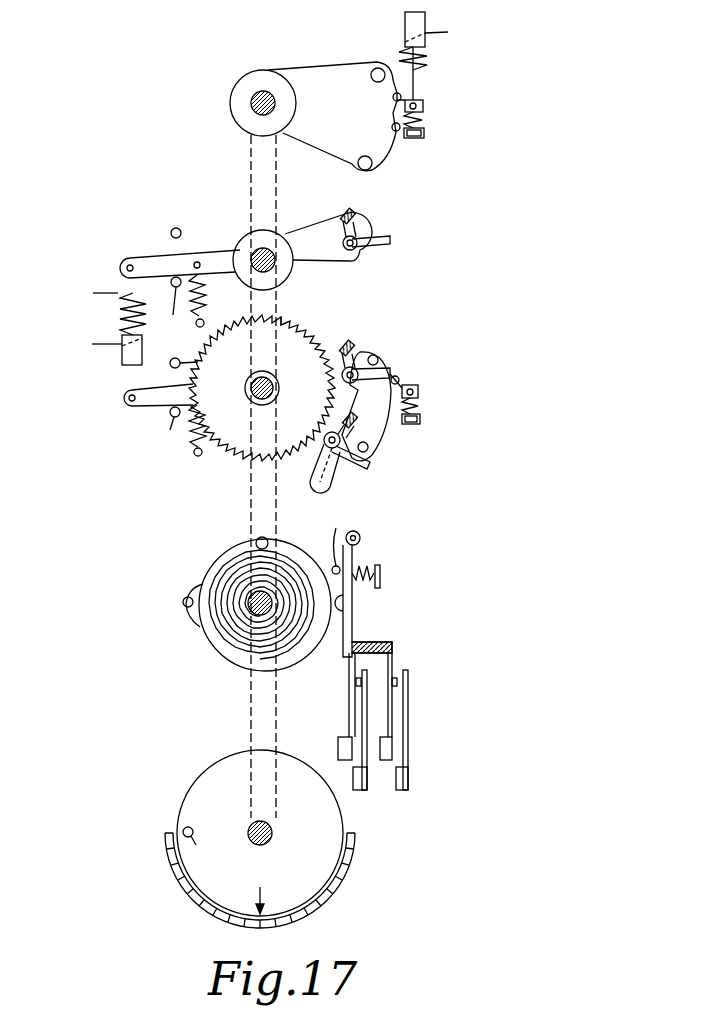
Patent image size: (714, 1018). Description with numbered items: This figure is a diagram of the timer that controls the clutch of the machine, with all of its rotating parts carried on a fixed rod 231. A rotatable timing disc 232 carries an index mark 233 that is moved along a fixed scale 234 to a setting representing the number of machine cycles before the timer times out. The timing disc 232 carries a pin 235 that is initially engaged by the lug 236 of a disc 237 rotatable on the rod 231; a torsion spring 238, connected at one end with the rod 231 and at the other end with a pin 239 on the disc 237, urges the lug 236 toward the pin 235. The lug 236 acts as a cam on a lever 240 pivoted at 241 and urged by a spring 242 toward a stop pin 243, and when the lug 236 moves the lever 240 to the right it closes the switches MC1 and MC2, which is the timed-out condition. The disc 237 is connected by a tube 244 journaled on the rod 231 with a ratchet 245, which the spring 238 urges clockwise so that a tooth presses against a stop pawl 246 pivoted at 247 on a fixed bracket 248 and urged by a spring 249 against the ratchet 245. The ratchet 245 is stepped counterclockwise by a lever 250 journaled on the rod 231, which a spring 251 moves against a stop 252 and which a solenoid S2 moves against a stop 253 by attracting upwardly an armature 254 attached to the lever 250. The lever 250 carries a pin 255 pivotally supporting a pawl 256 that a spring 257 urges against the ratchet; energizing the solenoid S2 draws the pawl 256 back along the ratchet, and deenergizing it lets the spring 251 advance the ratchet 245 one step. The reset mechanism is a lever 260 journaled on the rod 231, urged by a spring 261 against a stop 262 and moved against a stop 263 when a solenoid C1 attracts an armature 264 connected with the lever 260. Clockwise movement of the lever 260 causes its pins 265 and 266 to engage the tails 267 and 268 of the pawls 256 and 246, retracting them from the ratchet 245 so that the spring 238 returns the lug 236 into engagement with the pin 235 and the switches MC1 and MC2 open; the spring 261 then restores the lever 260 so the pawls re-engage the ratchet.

The fixed rod 231 is at (255, 104).
The timing disc 232 is at (195, 797).
The index mark 233 is at (262, 895).
The fixed scale 234 is at (340, 887).
The pin 235 is at (186, 598).
The lug 236 is at (196, 625).
The disc 237 is at (232, 670).
The torsion spring 238 is at (288, 658).
The pin 239 is at (255, 543).
The lever 240 is at (355, 556).
The pivot 241 is at (360, 537).
The spring 242 is at (369, 652).
The stop pin 243 is at (344, 540).
The tube 244 is at (245, 478).
The ratchet 245 is at (284, 322).
The stop pawl 246 is at (364, 413).
The pivot 247 is at (353, 464).
The fixed bracket 248 is at (322, 488).
The spring 249 is at (380, 432).
The lever 250 is at (244, 240).
The spring 251 is at (205, 313).
The stop 252 is at (166, 365).
The stop 253 is at (176, 228).
The armature 254 is at (122, 362).
The pin 255 is at (358, 252).
The pawl 256 is at (335, 232).
The spring 257 is at (358, 223).
The lever 260 is at (327, 78).
The spring 261 is at (428, 118).
The stop 262 is at (392, 100).
The stop 263 is at (397, 131).
The armature 264 is at (425, 25).
The pin 265 is at (377, 68).
The pin 266 is at (357, 163).
The tail 267 is at (398, 384).
The tail 268 is at (352, 460).
The solenoid C1 is at (417, 73).
The solenoid S2 is at (118, 305).
The switch MC1 is at (358, 688).
The switch MC2 is at (400, 689).